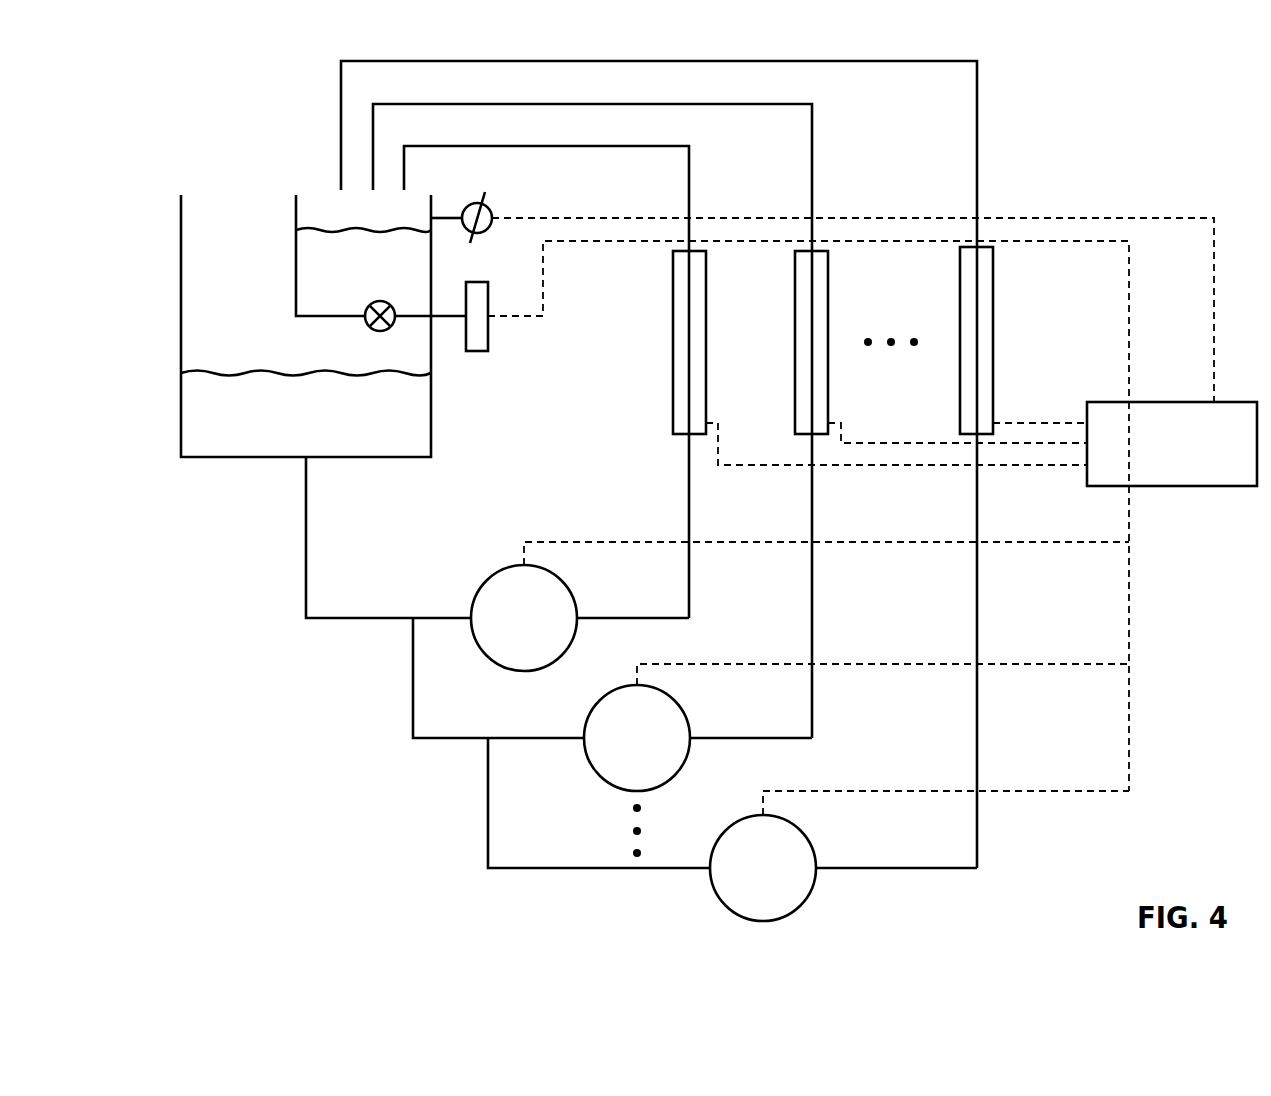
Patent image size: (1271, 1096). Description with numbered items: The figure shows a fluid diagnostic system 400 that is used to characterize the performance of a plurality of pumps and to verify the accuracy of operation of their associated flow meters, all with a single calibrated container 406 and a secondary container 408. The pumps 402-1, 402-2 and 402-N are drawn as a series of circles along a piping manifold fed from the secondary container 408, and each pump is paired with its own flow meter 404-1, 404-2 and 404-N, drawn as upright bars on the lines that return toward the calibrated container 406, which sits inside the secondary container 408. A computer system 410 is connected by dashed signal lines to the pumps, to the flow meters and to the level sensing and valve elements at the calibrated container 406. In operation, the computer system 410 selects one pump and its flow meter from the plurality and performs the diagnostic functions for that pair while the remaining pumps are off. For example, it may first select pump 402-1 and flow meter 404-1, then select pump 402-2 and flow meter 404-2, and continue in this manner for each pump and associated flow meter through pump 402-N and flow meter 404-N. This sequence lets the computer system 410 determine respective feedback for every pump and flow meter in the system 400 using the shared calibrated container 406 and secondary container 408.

The fluid diagnostic system 400 is at (1138, 87).
The pump 402-1 is at (498, 578).
The pump 402-2 is at (675, 700).
The pump 402-N is at (805, 830).
The flow meter 404-1 is at (673, 385).
The flow meter 404-2 is at (828, 383).
The flow meter 404-N is at (993, 358).
The calibrated container 406 is at (296, 270).
The secondary container 408 is at (431, 417).
The computer system 410 is at (1183, 486).